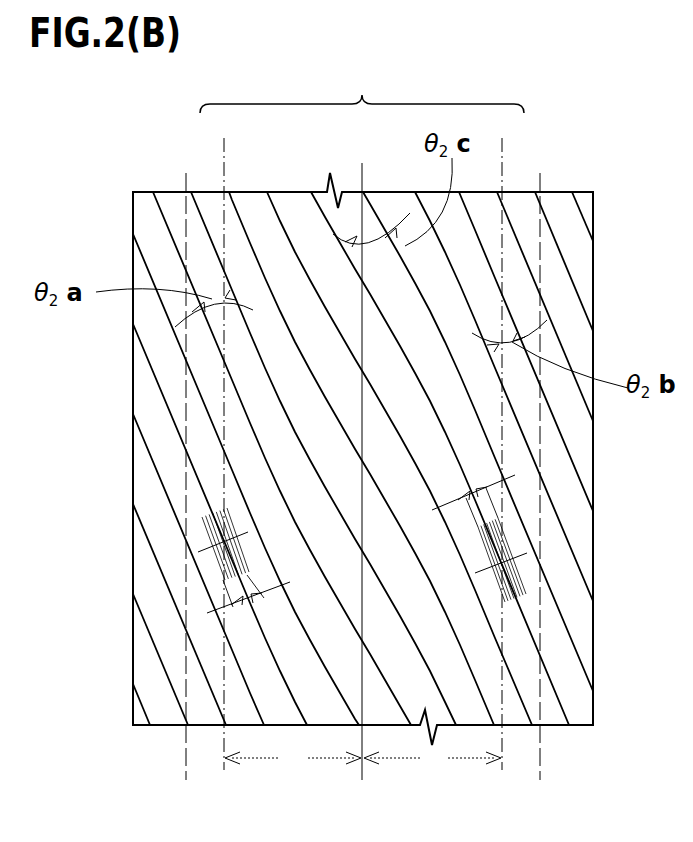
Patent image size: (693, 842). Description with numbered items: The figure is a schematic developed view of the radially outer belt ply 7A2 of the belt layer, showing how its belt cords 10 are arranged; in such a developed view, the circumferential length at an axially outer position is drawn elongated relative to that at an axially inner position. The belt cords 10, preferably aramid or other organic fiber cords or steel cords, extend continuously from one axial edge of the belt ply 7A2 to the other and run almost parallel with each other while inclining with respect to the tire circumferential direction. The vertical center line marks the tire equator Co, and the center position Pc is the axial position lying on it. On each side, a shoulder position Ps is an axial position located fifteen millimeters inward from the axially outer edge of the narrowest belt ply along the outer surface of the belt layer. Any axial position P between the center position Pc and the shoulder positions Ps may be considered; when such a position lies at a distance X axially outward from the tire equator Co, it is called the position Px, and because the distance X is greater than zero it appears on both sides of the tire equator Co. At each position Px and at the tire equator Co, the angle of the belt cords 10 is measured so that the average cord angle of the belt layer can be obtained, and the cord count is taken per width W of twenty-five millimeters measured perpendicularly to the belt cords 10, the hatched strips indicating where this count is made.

The belt cords 10 is at (280, 221).
The belt ply 7A2 is at (572, 164).
The axial position P is at (362, 86).
The position Px is at (361, 439).
The shoulder position Ps is at (363, 492).
The center position Pc is at (362, 501).
The tire equator Co is at (363, 165).
The width W is at (243, 607).
The distance X is at (363, 759).